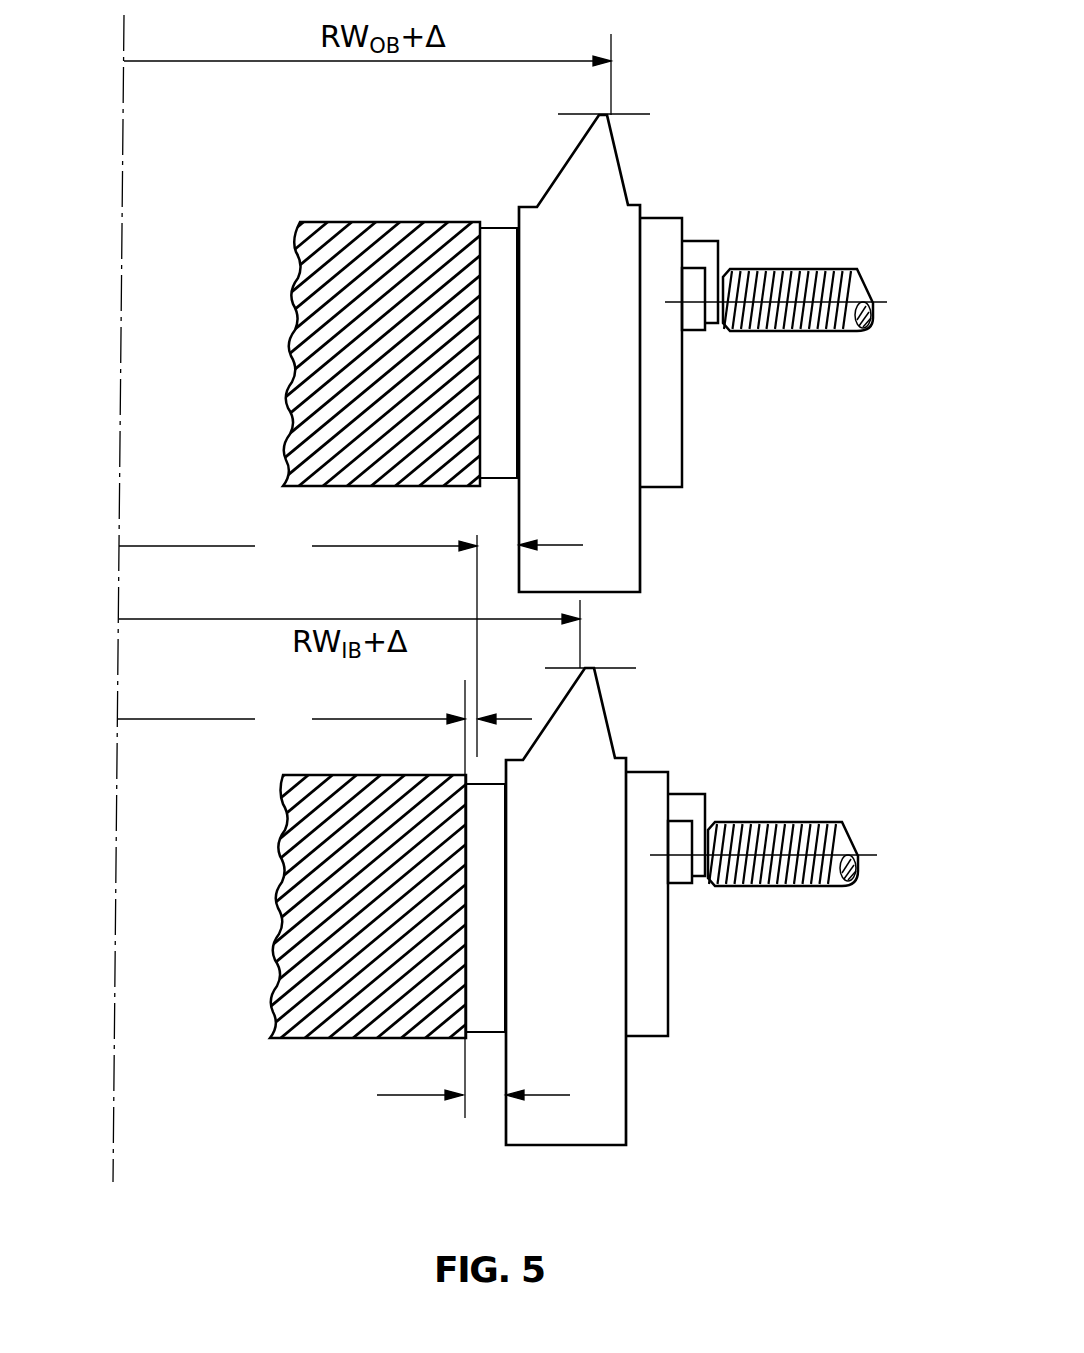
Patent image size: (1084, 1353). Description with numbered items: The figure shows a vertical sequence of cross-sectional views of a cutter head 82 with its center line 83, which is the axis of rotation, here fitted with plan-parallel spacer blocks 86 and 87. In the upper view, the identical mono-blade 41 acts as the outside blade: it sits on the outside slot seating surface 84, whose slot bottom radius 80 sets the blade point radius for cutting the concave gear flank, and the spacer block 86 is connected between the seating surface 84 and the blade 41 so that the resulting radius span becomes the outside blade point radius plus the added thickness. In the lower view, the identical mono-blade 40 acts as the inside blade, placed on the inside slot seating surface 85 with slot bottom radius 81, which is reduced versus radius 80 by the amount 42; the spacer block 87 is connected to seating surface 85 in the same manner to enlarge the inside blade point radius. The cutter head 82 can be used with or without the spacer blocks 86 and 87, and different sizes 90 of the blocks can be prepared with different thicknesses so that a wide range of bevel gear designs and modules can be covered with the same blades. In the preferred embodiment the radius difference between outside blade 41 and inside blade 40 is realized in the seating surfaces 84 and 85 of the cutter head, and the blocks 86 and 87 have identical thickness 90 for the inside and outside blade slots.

The mono-blade 40 is at (602, 1090).
The mono-blade 41 is at (620, 530).
The amount 42 is at (474, 692).
The slot bottom radius 80 is at (298, 548).
The slot bottom radius 81 is at (324, 721).
The cutter head 82 is at (290, 950).
The center line 83 is at (124, 267).
The outside slot seating surface 84 is at (483, 303).
The inside slot seating surface 85 is at (453, 966).
The spacer block 86 is at (498, 310).
The spacer block 87 is at (478, 995).
The thickness 90 is at (495, 547).